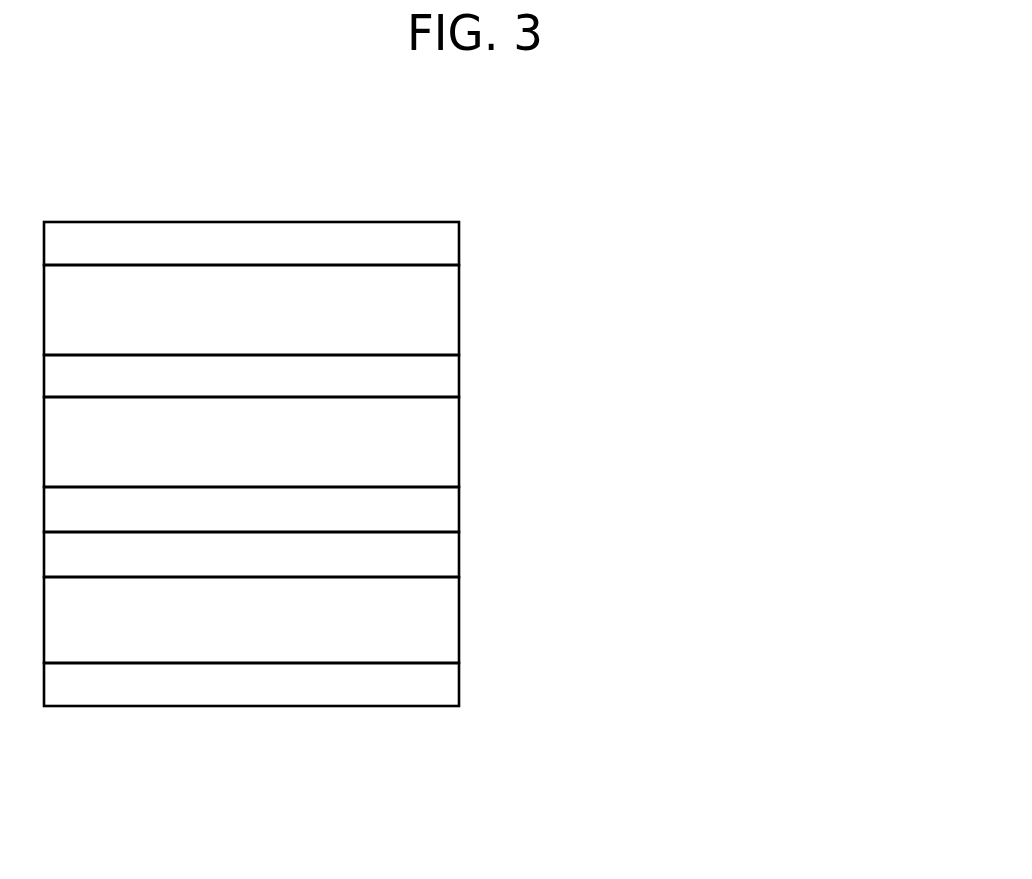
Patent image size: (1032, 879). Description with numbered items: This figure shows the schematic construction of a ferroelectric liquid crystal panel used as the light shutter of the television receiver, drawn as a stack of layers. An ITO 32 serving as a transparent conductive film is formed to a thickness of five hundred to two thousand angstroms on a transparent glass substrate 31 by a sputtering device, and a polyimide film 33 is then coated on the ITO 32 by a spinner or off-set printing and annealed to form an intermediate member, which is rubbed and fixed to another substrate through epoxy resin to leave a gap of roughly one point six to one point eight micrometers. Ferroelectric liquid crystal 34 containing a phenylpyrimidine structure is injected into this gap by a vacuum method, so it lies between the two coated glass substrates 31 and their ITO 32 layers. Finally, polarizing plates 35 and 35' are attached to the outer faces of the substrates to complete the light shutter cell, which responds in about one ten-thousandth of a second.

The polarizing plate 35' is at (403, 210).
The transparent glass substrate 31 is at (358, 310).
The ITO 32 is at (393, 378).
The ferroelectric liquid crystal 34 is at (422, 440).
The polyimide film 33 is at (430, 506).
The polarizing plate 35 is at (398, 718).